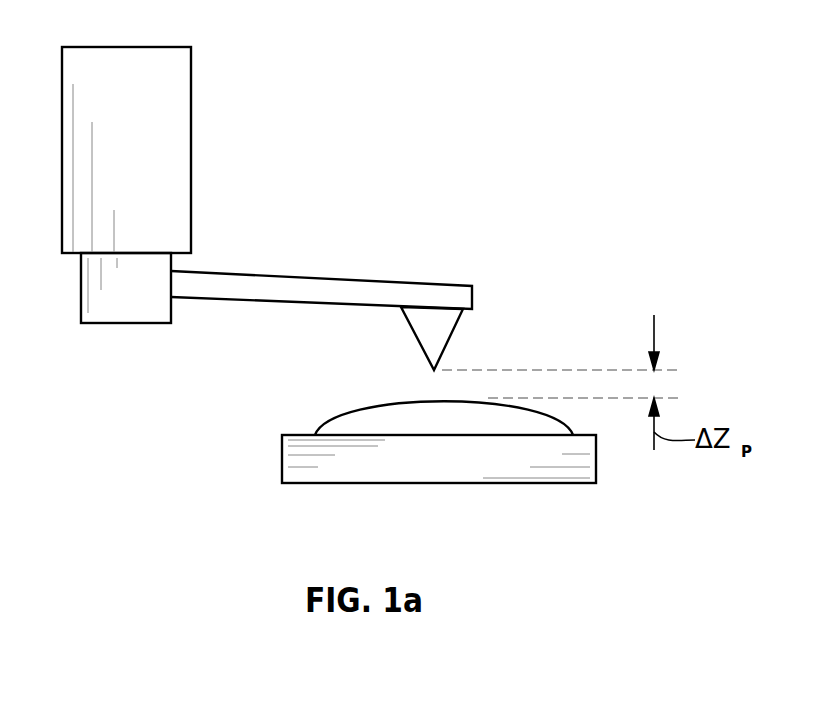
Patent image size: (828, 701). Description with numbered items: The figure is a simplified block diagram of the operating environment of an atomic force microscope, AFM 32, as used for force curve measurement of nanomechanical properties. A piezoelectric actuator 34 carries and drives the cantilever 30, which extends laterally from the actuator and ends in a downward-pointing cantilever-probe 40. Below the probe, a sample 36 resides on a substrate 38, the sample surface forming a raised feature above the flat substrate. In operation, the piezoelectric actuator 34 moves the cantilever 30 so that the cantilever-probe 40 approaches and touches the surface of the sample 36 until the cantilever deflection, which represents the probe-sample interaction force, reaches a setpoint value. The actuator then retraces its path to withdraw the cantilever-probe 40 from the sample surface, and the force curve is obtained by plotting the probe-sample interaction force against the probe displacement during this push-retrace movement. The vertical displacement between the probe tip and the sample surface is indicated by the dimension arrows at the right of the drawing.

The cantilever 30 is at (350, 278).
The atomic force microscope (AFM) 32 is at (420, 80).
The piezoelectric actuator 34 is at (191, 88).
The sample 36 is at (313, 410).
The substrate 38 is at (308, 484).
The cantilever-probe 40 is at (452, 332).